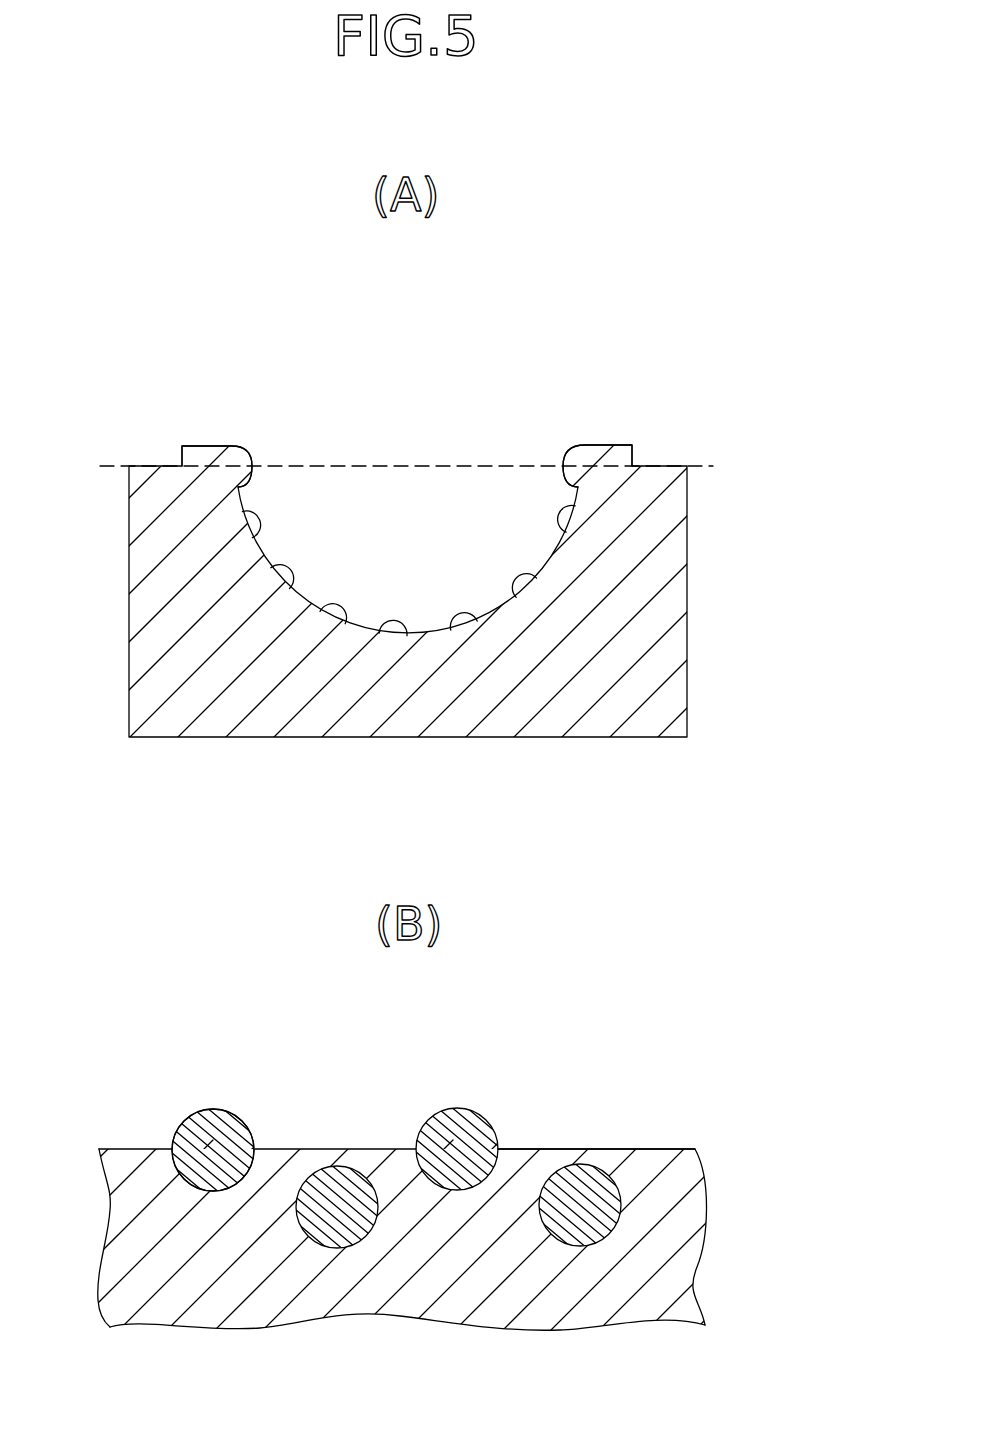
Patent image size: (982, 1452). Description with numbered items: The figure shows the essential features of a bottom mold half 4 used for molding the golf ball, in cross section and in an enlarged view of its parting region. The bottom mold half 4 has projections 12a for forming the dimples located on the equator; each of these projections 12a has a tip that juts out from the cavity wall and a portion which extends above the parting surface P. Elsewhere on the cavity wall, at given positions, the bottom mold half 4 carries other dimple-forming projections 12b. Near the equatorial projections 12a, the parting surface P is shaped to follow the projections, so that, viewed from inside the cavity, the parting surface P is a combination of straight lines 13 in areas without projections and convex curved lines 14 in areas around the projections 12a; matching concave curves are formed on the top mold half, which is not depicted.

The bottom mold half 4 is at (657, 583).
The projections 12a is at (245, 447).
The dimple-forming projections 12b is at (393, 620).
The straight lines 13 is at (575, 1148).
The convex curved lines 14 is at (217, 1108).
The parting surface P is at (310, 466).